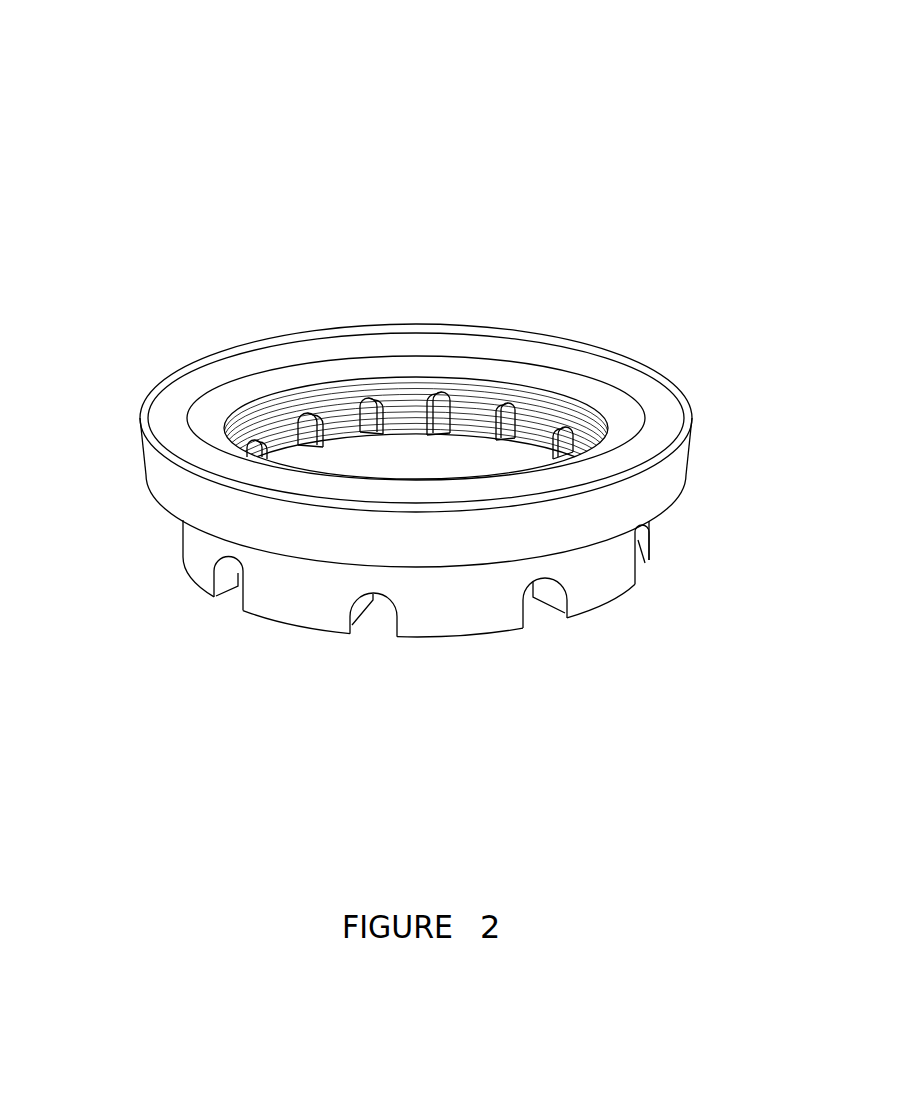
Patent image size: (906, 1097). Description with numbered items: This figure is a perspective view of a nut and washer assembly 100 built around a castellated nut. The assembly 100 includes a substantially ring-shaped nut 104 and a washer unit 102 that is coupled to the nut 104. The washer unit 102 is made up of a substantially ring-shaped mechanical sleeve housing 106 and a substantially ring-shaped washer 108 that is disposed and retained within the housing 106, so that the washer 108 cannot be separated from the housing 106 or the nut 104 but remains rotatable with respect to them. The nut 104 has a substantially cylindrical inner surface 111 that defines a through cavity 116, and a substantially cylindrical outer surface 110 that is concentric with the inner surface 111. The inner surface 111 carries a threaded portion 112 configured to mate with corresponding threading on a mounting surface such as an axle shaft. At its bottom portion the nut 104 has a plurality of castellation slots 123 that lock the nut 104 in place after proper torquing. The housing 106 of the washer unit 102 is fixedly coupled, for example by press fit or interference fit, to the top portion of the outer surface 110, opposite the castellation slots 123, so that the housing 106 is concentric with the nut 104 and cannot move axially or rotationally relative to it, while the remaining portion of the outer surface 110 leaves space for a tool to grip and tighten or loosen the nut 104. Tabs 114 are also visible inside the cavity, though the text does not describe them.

The nut and washer assembly 100 is at (403, 406).
The washer unit 102 is at (403, 361).
The nut 104 is at (399, 653).
The mechanical sleeve housing 106 is at (687, 472).
The washer 108 is at (657, 403).
The outer surface 110 is at (603, 582).
The inner surface 111 is at (258, 385).
The threaded portion 112 is at (475, 415).
The tabs 114 is at (453, 302).
The through cavity 116 is at (434, 470).
The castellation slots 123 is at (540, 615).